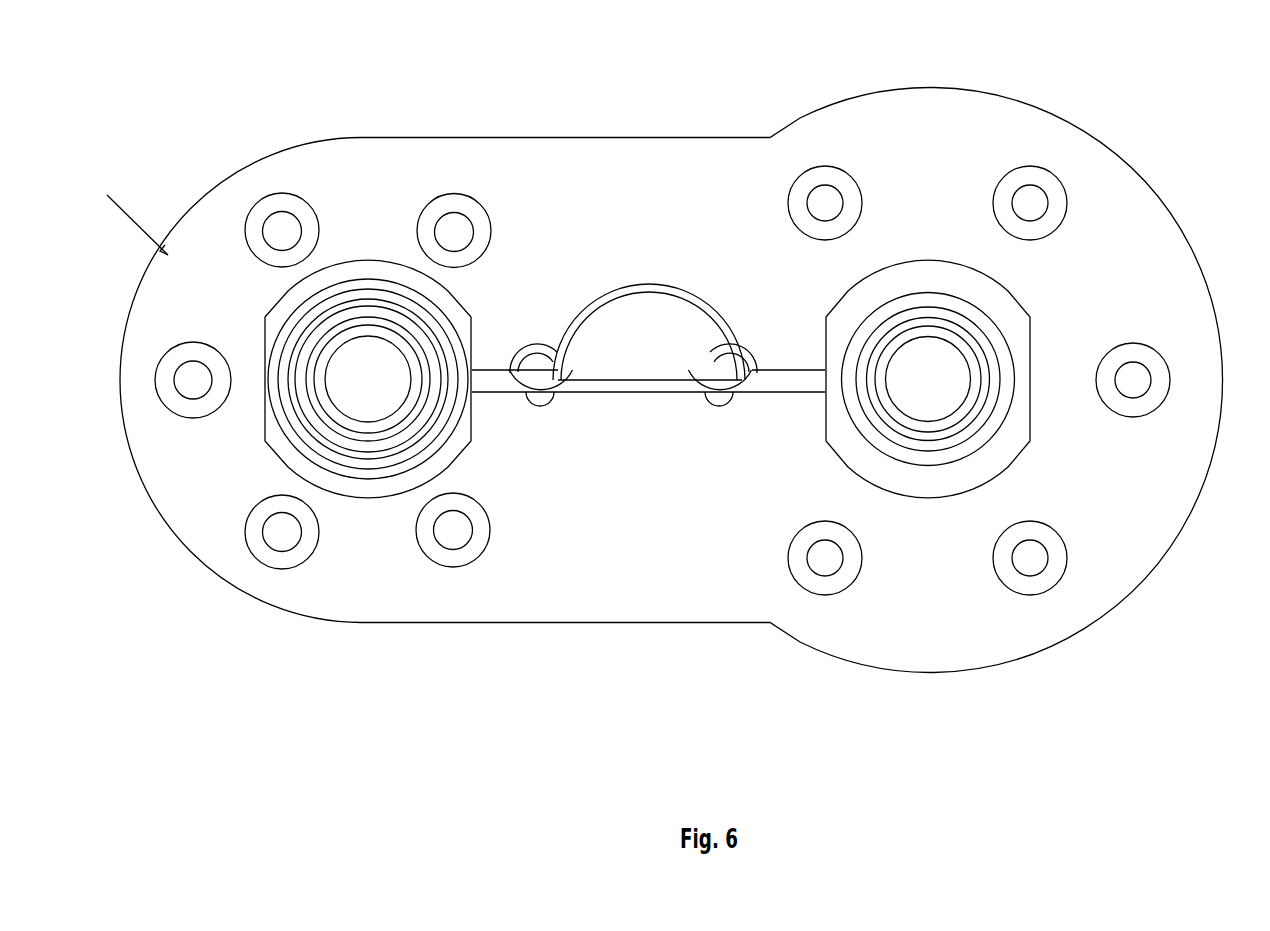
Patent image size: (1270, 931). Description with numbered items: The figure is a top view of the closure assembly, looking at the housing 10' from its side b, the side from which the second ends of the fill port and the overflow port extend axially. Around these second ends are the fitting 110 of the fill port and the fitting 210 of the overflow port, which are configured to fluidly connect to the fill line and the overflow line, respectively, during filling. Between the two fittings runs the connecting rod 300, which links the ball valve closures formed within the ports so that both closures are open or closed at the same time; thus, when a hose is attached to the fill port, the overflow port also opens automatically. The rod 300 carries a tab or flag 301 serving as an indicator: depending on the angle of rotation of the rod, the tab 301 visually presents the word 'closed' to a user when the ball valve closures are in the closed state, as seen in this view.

The housing 10' is at (677, 380).
The fitting 110 is at (382, 367).
The fitting 210 is at (945, 368).
The connecting rod 300 is at (495, 385).
The tab or flag 301 is at (655, 360).
The side of the housing b is at (135, 211).